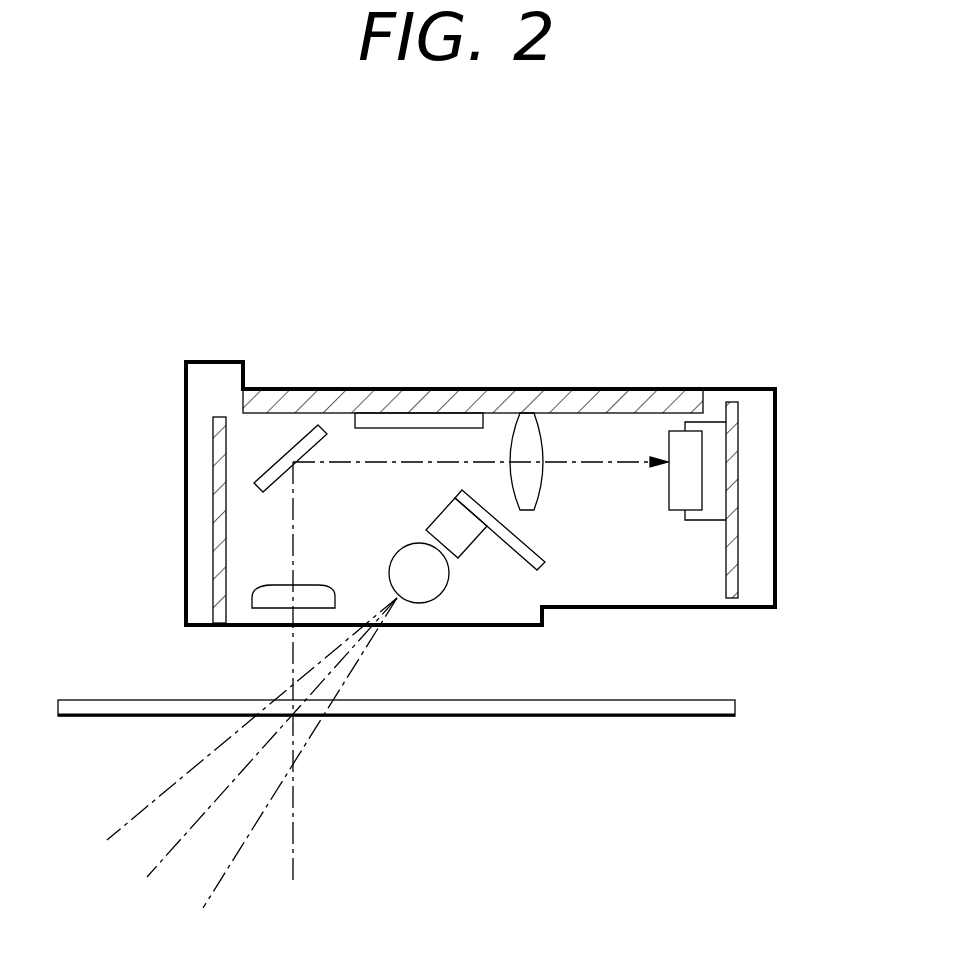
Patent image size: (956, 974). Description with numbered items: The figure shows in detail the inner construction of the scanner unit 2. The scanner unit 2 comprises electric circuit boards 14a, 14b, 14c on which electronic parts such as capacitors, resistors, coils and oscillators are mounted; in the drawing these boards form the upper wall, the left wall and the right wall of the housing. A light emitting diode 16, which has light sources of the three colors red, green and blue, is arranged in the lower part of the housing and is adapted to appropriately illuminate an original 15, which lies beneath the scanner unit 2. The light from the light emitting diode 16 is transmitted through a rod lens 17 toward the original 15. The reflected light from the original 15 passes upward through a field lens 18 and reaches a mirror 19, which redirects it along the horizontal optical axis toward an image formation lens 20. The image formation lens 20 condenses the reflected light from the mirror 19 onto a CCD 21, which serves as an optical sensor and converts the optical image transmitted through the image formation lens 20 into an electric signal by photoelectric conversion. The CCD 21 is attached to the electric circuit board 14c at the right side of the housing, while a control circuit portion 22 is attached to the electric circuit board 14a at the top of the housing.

The scanner unit 2 is at (541, 236).
The electric circuit board 14a is at (450, 390).
The electric circuit board 14b is at (215, 488).
The electric circuit board 14c is at (733, 465).
The original 15 is at (122, 700).
The light emitting diode 16 is at (535, 562).
The rod lens 17 is at (430, 588).
The field lens 18 is at (265, 610).
The mirror 19 is at (285, 453).
The image formation lens 20 is at (533, 437).
The CCD 21 is at (680, 435).
The control circuit portion 22 is at (380, 418).